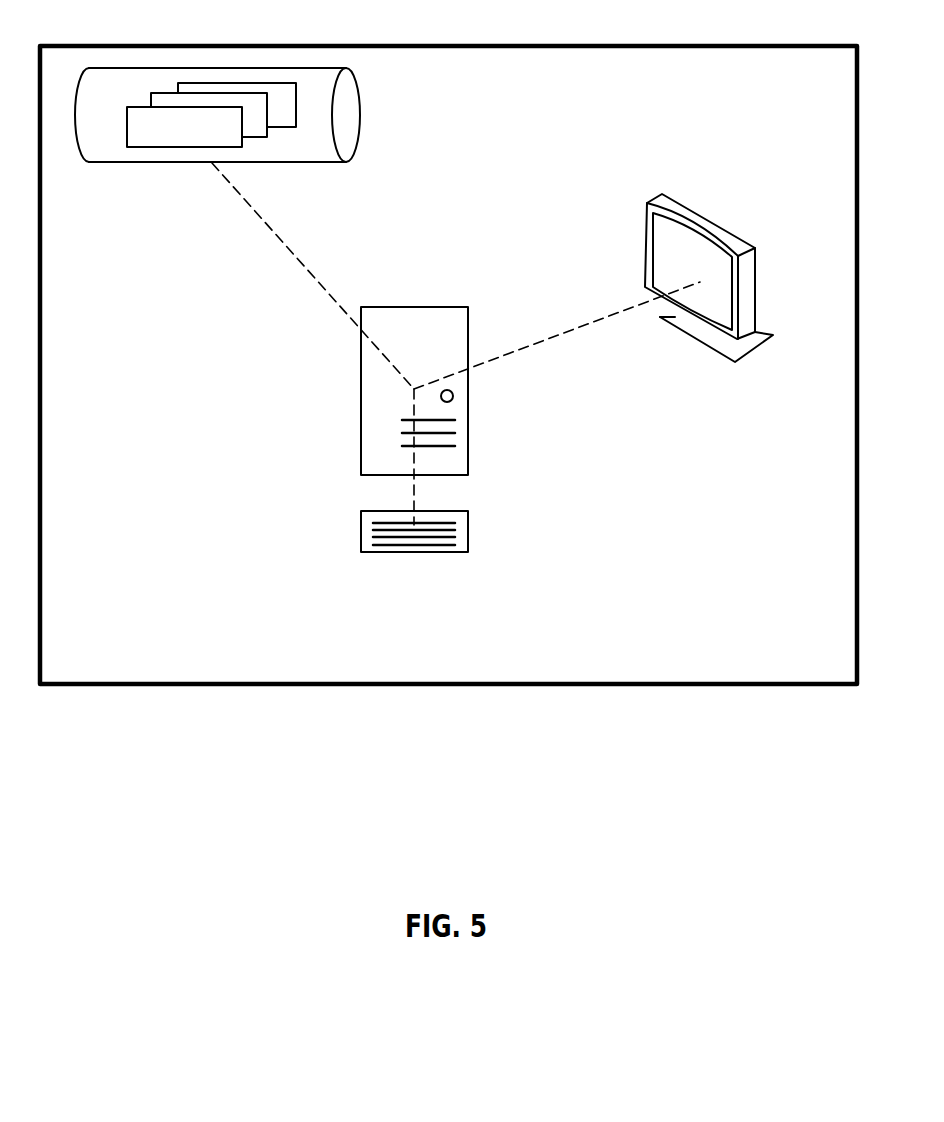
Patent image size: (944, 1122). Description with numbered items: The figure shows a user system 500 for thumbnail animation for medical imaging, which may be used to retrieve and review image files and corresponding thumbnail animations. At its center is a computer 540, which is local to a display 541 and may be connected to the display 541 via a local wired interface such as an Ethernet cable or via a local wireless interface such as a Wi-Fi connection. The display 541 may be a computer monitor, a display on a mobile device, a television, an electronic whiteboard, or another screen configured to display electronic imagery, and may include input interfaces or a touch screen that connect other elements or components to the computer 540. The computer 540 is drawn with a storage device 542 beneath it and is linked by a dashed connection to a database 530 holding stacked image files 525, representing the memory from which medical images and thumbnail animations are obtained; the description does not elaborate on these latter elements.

The system 500 is at (690, 36).
The data records 525 is at (206, 139).
The database 530 is at (158, 166).
The computer 540 is at (436, 304).
The display 541 is at (694, 146).
The storage device 542 is at (472, 524).